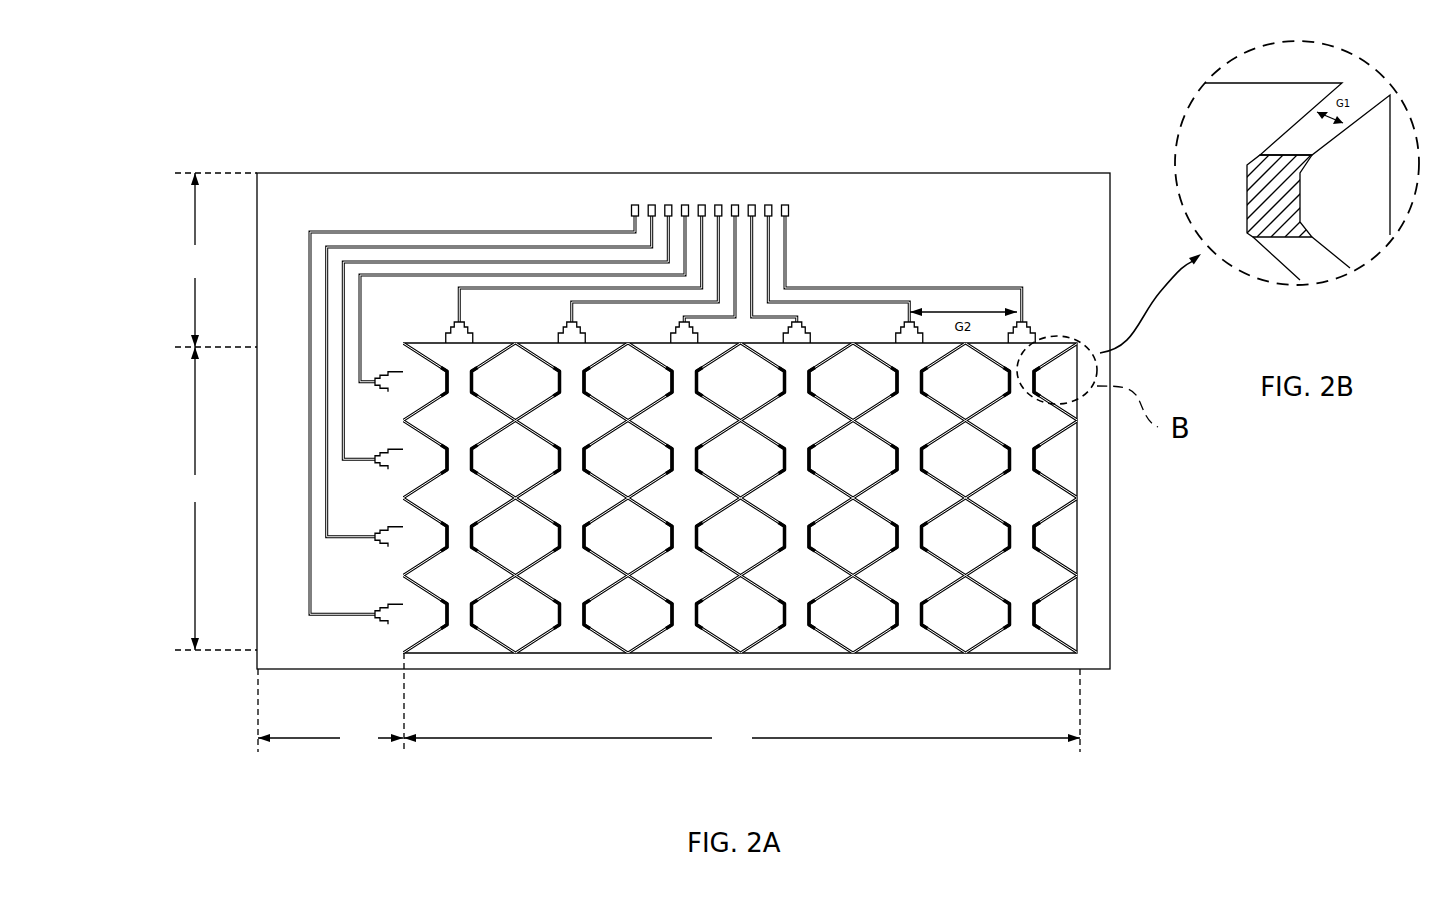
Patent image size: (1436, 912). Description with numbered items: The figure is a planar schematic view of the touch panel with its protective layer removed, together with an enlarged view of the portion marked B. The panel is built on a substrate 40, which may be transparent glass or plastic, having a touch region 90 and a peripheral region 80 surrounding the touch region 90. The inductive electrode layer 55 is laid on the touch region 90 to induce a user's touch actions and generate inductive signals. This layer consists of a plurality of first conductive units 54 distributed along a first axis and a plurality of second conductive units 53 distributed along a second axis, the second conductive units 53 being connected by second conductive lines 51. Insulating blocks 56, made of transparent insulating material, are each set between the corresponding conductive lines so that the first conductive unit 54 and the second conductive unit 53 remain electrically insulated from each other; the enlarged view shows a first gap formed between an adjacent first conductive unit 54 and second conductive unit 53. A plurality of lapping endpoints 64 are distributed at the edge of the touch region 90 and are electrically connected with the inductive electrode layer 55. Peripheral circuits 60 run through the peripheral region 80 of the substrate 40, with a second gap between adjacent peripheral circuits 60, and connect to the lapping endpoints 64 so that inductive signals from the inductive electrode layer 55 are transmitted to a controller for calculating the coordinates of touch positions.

In FIG. 2A, the substrate 40 is at (318, 192).
In FIG. 2A, the second conductive line 51 is at (781, 527).
In FIG. 2A, the second conductive unit 53 is at (1027, 495).
In FIG. 2B, the second conductive unit 53 is at (1208, 113).
In FIG. 2A, the first conductive unit 54 is at (1068, 448).
In FIG. 2B, the first conductive unit 54 is at (1358, 242).
In FIG. 2A, the inductive electrode layer 55 is at (781, 498).
In FIG. 2B, the insulating block 56 is at (1268, 228).
In FIG. 2A, the peripheral circuit 60 is at (425, 235).
In FIG. 2A, the lapping endpoint 64 is at (1027, 340).
In FIG. 2A, the peripheral region 80 is at (289, 462).
In FIG. 2A, the touch region 90 is at (627, 549).